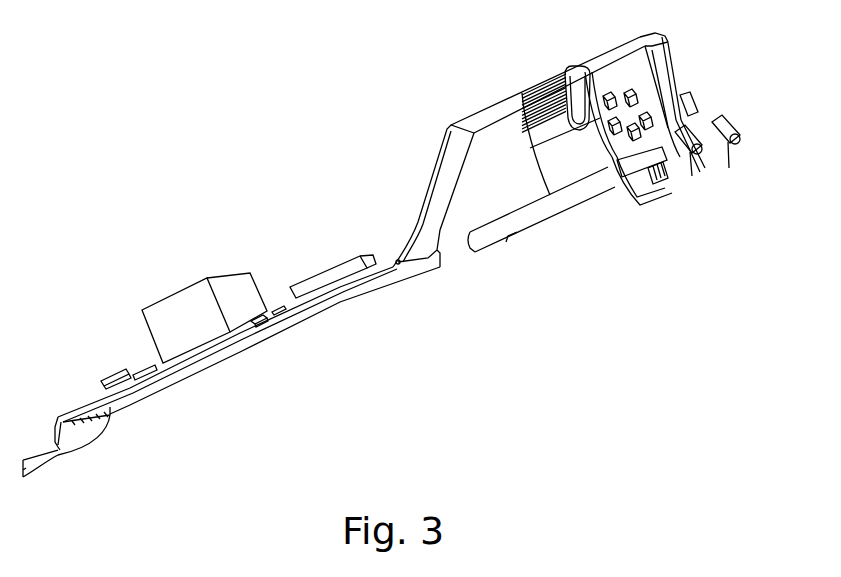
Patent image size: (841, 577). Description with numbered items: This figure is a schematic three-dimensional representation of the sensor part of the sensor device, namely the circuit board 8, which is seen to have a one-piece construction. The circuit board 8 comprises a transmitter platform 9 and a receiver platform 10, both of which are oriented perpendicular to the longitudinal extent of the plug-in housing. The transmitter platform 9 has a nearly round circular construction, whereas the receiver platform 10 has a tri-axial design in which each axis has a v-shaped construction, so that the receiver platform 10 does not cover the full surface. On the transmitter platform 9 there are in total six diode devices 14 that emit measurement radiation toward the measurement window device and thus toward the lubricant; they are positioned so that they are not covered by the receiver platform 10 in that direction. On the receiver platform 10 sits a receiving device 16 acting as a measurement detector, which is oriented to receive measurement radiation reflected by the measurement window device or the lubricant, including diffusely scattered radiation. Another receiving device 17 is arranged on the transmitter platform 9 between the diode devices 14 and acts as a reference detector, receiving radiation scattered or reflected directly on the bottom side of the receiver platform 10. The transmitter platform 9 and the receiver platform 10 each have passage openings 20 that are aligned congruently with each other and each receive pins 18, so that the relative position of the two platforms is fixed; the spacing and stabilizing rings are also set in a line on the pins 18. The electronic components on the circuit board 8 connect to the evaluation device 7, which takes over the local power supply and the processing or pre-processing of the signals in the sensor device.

The evaluation device 7 is at (180, 305).
The circuit board 8 is at (427, 186).
The transmitter platform 9 is at (660, 202).
The receiver platform 10 is at (731, 165).
The diode devices 14 is at (605, 97).
The receiving device 16 is at (697, 100).
The other receiving device 17 is at (612, 150).
The pins 18 is at (512, 240).
The passage openings 20 is at (673, 178).